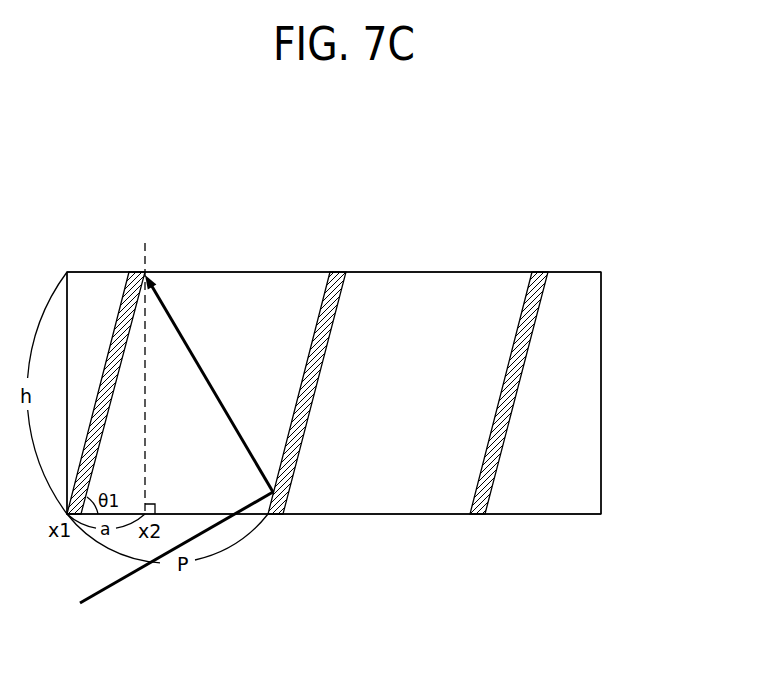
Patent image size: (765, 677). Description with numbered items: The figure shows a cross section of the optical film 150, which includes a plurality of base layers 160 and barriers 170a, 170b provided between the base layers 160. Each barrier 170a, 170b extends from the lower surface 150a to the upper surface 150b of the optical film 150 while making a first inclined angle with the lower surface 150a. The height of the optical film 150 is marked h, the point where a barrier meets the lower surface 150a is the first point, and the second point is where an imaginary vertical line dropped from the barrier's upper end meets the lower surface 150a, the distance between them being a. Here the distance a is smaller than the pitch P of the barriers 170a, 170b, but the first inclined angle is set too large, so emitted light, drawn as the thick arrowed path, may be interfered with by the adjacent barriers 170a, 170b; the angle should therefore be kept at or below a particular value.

The optical film 150 is at (356, 215).
The lower surface 150a is at (532, 515).
The upper surface 150b is at (463, 272).
The base layer 160 is at (212, 305).
The barrier 170a is at (130, 280).
The barrier 170b is at (535, 308).